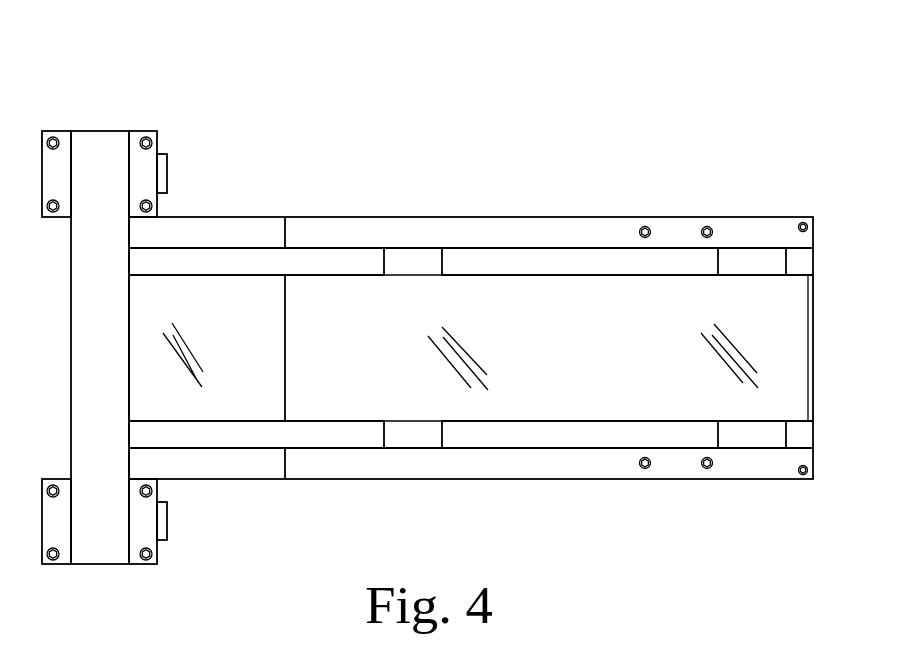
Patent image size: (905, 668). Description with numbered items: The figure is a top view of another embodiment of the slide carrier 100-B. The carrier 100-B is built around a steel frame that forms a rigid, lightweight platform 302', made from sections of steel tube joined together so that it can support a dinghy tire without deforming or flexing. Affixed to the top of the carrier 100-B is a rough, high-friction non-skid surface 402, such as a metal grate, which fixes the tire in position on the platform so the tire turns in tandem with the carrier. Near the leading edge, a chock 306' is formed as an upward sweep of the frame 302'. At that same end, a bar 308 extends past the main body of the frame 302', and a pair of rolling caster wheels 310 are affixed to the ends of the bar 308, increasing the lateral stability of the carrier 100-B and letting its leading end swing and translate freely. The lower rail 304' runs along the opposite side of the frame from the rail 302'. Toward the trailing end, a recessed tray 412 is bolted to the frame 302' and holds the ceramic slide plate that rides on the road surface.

The slide carrier 100-B is at (684, 72).
The bar 308 is at (97, 132).
The rolling caster wheels 310 is at (167, 175).
The platform 302' is at (471, 208).
The lower frame rail 304' is at (471, 489).
The chock 306' is at (224, 387).
The non-skid surface 402 is at (607, 366).
The recessed tray 412 is at (758, 450).